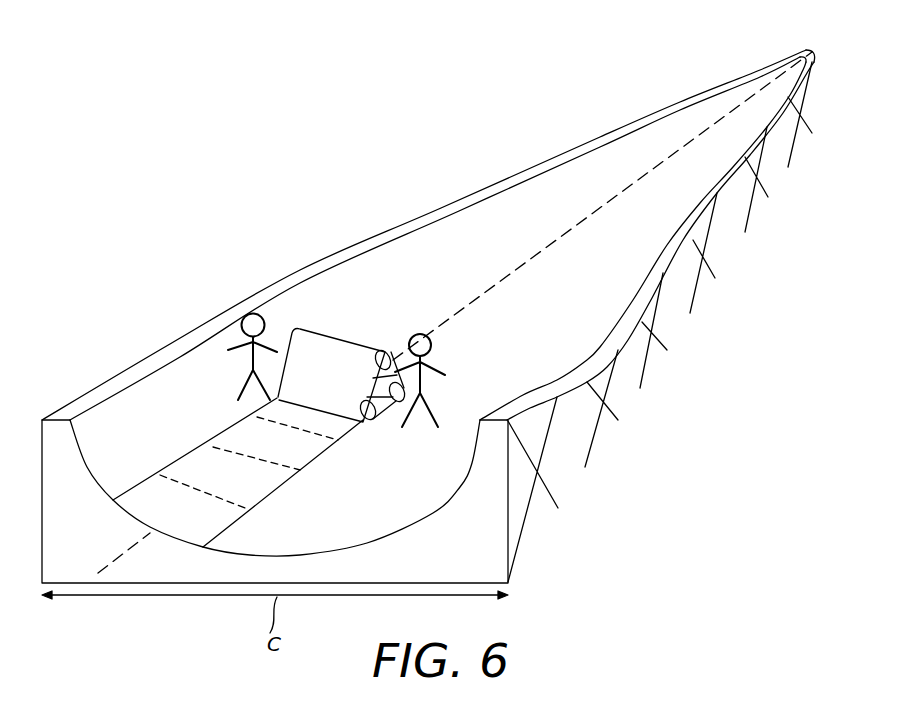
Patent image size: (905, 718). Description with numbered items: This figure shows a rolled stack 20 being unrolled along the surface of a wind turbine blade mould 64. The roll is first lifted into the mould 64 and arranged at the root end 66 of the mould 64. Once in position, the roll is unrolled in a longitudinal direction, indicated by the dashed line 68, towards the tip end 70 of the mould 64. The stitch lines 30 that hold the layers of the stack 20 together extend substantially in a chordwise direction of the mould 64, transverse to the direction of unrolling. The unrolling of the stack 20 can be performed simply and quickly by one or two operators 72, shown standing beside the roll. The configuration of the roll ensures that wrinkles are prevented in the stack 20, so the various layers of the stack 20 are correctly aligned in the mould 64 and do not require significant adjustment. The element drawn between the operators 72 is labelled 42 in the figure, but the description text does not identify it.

The stack 20 is at (198, 462).
The stitch lines 30 is at (278, 467).
The vehicle 42 is at (342, 343).
The wind turbine blade mould 64 is at (477, 195).
The root end 66 is at (102, 423).
The dashed line 68 is at (693, 133).
The tip end 70 is at (798, 53).
The operators 72 is at (250, 312).